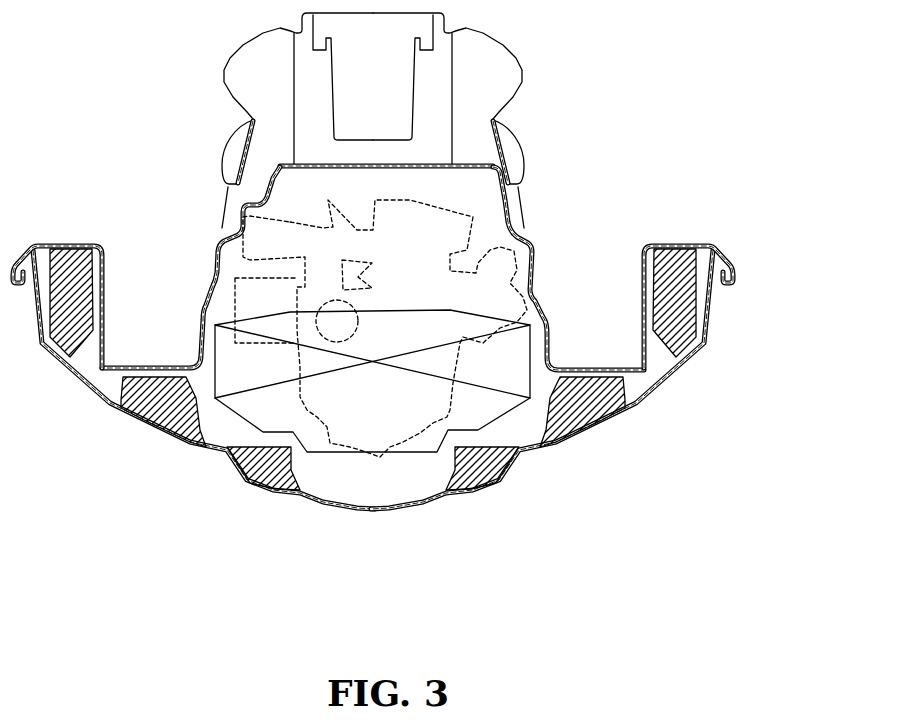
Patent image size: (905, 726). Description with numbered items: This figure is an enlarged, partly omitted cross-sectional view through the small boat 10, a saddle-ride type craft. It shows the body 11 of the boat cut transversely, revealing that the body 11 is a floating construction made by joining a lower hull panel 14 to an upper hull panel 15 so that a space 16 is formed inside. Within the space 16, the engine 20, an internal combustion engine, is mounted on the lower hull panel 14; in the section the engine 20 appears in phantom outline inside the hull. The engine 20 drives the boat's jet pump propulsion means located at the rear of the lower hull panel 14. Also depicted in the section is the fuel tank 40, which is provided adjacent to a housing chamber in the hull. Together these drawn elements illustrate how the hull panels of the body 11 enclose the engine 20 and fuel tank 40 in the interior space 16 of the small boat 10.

The small boat 10 is at (410, 234).
The body 11 is at (735, 240).
The lower hull panel 14 is at (680, 372).
The upper hull panel 15 is at (533, 252).
The space 16 is at (479, 172).
The engine 20 is at (487, 237).
The fuel tank 40 is at (530, 340).